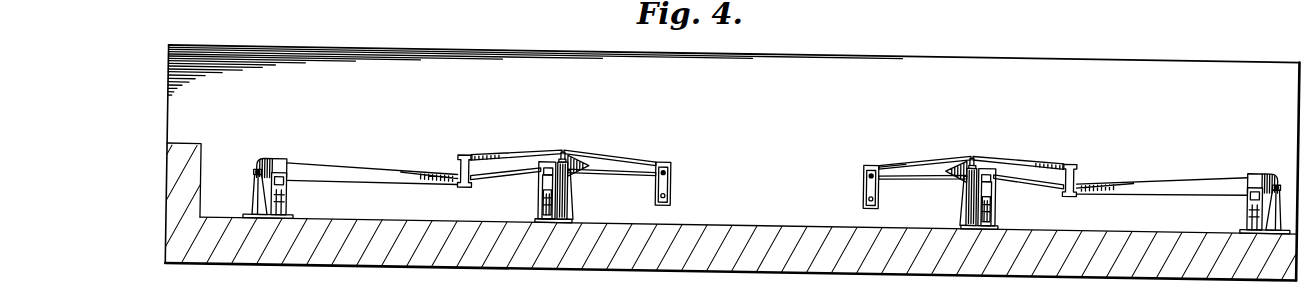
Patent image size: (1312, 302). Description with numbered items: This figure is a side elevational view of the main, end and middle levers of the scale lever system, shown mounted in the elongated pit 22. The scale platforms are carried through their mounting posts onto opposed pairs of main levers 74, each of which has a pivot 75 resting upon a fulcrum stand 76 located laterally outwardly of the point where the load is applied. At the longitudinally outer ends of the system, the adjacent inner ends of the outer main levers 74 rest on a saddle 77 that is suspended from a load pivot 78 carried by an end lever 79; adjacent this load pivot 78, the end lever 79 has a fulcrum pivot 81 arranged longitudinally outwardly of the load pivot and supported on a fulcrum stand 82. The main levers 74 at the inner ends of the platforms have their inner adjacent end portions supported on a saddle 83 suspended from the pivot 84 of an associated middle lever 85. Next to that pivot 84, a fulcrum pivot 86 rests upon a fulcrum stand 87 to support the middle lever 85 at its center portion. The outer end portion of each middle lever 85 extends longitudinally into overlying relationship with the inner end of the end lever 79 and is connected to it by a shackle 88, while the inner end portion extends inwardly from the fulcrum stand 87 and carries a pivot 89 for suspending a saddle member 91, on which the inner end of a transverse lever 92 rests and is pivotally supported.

The pit 22 is at (765, 206).
The main lever 74 is at (284, 204).
The pivot 75 is at (287, 192).
The fulcrum stand 76 is at (297, 217).
The saddle 77 is at (280, 175).
The load pivot 78 is at (267, 160).
The end lever 79 is at (350, 166).
The fulcrum pivot 81 is at (255, 168).
The fulcrum stand 82 is at (254, 190).
The saddle 83 is at (540, 157).
The pivot 84 is at (548, 162).
The middle lever 85 is at (930, 155).
The fulcrum pivot 86 is at (565, 148).
The fulcrum stand 87 is at (571, 190).
The shackle 88 is at (459, 162).
The pivot 89 is at (664, 155).
The saddle member 91 is at (670, 165).
The transverse lever 92 is at (666, 188).